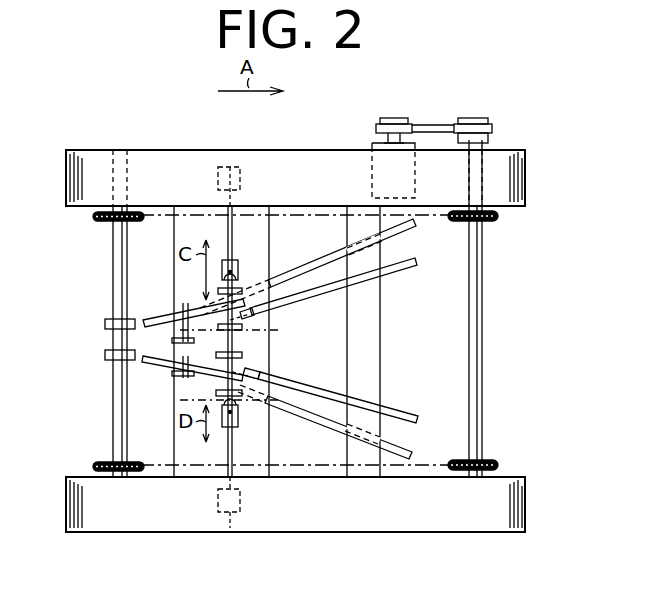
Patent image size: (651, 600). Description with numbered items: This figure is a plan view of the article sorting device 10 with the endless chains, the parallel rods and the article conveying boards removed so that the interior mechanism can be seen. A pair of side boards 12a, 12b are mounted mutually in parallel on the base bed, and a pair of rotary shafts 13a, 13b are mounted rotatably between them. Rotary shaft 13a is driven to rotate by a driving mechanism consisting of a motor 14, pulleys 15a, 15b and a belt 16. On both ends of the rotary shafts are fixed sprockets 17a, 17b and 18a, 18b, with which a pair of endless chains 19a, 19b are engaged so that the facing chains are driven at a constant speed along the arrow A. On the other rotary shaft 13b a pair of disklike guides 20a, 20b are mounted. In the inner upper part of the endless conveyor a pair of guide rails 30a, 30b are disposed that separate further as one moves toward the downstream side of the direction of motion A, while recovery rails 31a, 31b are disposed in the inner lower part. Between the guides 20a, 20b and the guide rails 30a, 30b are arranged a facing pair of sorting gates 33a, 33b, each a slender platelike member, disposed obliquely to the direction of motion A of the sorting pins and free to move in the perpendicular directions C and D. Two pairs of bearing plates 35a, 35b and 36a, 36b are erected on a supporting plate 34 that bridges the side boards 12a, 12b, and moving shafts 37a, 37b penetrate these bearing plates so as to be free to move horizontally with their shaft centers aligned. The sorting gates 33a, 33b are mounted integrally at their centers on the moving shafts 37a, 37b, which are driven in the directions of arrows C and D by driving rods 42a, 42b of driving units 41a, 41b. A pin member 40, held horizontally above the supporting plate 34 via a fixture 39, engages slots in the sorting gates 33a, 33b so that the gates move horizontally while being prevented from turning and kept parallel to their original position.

The transfer apparatus 10 is at (518, 116).
The side board 12a is at (305, 165).
The side board 12b is at (285, 532).
The rotary shaft 13a is at (482, 343).
The rotary shaft 13b is at (113, 275).
The motor 14 is at (370, 171).
The pulley 15a is at (393, 118).
The pulley 15b is at (474, 118).
The belt 16 is at (430, 125).
The sprocket 17a is at (492, 218).
The sprocket 17b is at (494, 464).
The sprocket 18a is at (94, 220).
The sprocket 18b is at (94, 464).
The endless chain 19a is at (198, 214).
The endless chain 19b is at (198, 463).
The disklike guide 20a is at (105, 322).
The disklike guide 20b is at (105, 355).
The guide rail 30a is at (412, 264).
The guide rail 30b is at (417, 418).
The recovery rail 31a is at (408, 223).
The recovery rail 31b is at (410, 454).
The sorting gate 33a is at (200, 313).
The sorting gate 33b is at (205, 375).
The supporting plate 34 is at (300, 470).
The bearing plate 35a is at (243, 327).
The bearing plate 35b is at (240, 290).
The bearing plate 36a is at (243, 354).
The bearing plate 36b is at (240, 395).
The moving shaft 37a is at (260, 318).
The moving shaft 37b is at (260, 374).
The fixture 39 is at (183, 335).
The pin member 40 is at (183, 360).
The driving unit 41a is at (230, 167).
The driving unit 41b is at (230, 512).
The driving rod 42a is at (238, 215).
The driving rod 42b is at (238, 455).